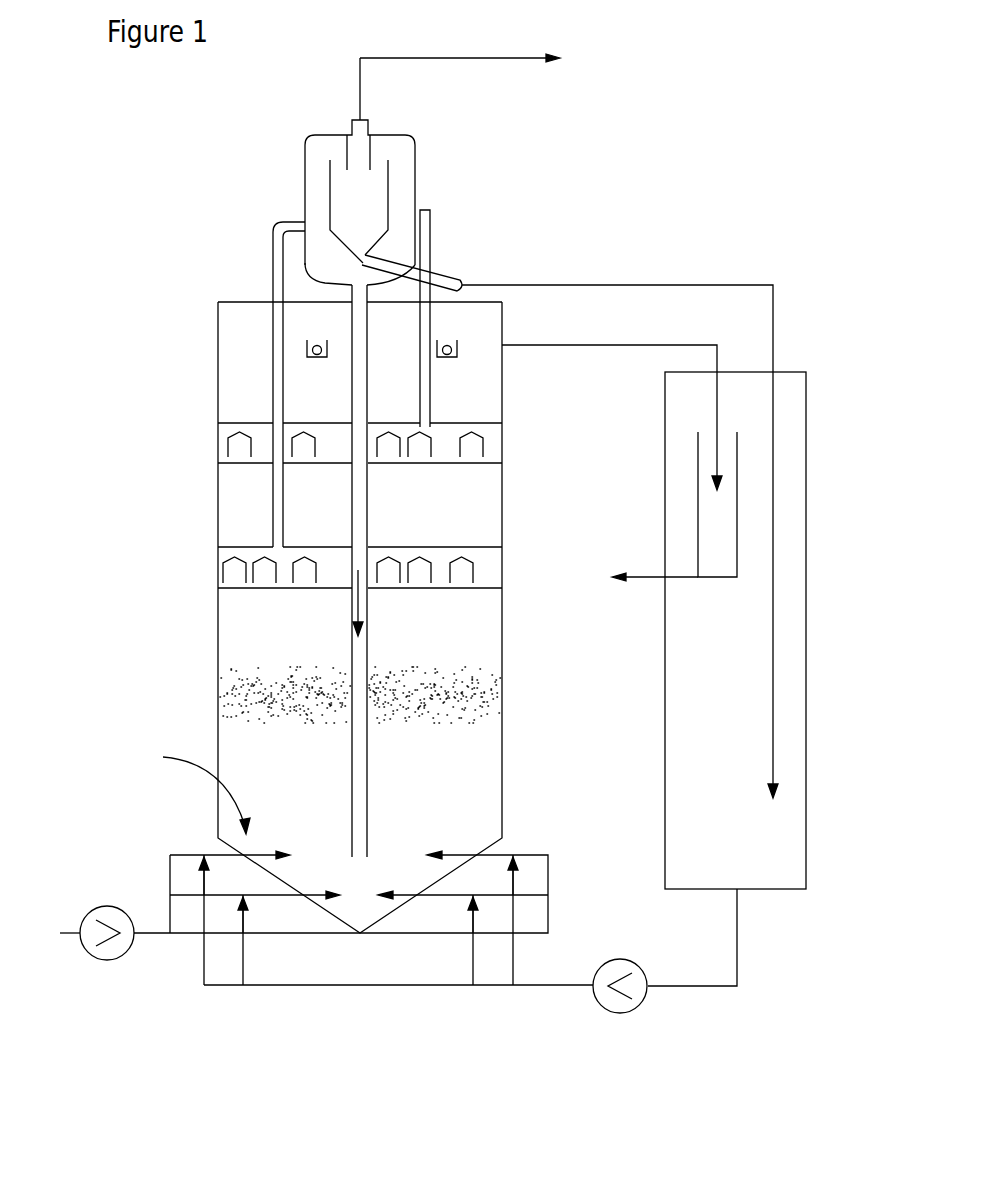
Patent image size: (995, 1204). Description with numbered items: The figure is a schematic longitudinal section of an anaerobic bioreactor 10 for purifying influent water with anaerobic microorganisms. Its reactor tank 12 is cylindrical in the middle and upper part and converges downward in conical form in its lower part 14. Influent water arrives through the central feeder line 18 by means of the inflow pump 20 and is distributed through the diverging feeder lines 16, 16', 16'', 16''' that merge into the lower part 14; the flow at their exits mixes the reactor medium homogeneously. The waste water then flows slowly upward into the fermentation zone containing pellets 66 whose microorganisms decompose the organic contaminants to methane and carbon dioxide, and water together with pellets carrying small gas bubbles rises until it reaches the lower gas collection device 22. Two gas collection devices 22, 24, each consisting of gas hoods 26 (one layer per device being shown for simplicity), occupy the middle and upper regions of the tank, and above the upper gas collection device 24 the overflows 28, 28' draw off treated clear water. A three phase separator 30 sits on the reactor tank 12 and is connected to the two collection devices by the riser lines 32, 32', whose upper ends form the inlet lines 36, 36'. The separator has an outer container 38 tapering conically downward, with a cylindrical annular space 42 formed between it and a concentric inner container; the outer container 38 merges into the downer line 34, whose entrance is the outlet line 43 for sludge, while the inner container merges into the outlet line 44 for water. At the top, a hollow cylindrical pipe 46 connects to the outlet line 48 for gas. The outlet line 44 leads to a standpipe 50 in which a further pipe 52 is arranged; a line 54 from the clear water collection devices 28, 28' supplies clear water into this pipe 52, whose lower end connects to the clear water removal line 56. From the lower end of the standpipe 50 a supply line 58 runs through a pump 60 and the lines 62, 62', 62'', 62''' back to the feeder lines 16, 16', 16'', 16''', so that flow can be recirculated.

The anaerobic bioreactor 10 is at (183, 556).
The reactor tank 12 is at (218, 642).
The lower part 14 is at (191, 791).
The feeder line 16 is at (364, 877).
The feeder line 16' is at (537, 902).
The feeder line 16'' is at (211, 864).
The feeder line 16''' is at (220, 894).
The central feeder line 18 is at (70, 937).
The inflow pump 20 is at (113, 958).
The gas collection device 22 is at (490, 578).
The gas collection device 24 is at (490, 450).
The gas hoods 26 is at (226, 433).
The overflow 28 is at (231, 328).
The overflow 28' is at (510, 331).
The three phase separator 30 is at (422, 170).
The riser line 32 is at (209, 393).
The riser line 32' is at (502, 329).
The downer line 34 is at (358, 355).
The inlet line 36 is at (258, 226).
The inlet line 36' is at (472, 213).
The outer container 38 is at (403, 133).
The cylindrical annular space 42 is at (318, 185).
The outlet line for sludge 43 is at (360, 295).
The outlet line for water 44 is at (452, 282).
The hollow cylindrical pipe 46 is at (345, 130).
The outlet line for gas 48 is at (478, 58).
The standpipe 50 is at (808, 628).
The pipe 52 is at (720, 518).
The line 54 is at (675, 345).
The clear water removal line 56 is at (648, 577).
The supply line 58 is at (739, 970).
The pump 60 is at (637, 1005).
The line 62 is at (398, 920).
The line 62' is at (499, 974).
The line 62'' is at (284, 974).
The line 62''' is at (236, 954).
The pellets 66 is at (245, 685).